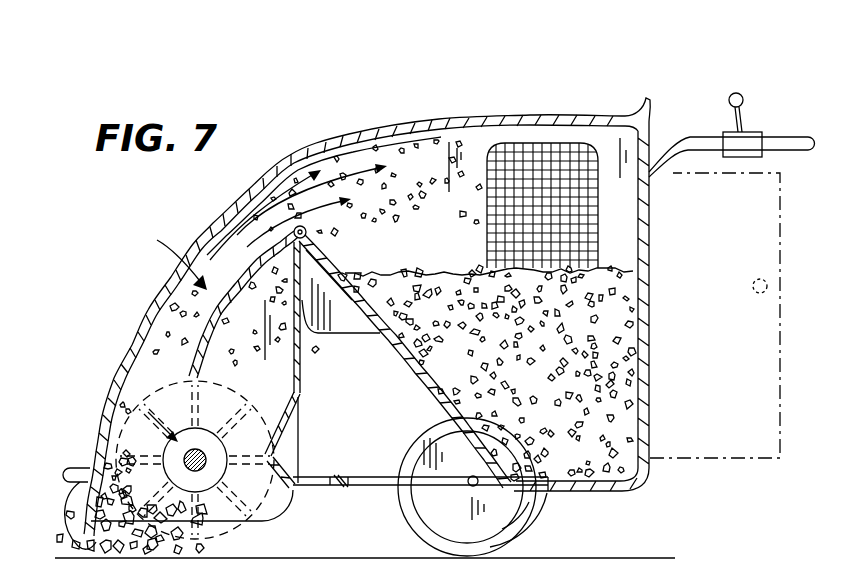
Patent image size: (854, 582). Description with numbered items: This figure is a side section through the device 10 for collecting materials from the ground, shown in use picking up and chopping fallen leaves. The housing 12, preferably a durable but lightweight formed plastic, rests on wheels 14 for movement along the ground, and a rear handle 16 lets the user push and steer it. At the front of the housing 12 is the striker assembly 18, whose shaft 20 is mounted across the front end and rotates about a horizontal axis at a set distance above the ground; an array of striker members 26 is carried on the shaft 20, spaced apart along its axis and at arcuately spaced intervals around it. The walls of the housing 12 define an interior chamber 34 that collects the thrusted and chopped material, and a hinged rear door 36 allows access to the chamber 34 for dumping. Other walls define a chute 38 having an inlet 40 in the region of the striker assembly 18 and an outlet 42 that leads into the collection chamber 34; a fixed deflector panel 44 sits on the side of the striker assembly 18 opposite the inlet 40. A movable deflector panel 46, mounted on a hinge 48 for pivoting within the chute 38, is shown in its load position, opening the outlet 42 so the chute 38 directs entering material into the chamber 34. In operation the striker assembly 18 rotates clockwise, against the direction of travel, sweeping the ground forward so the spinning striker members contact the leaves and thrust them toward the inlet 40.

The device 10 is at (589, 97).
The housing 12 is at (419, 126).
The wheels 14 is at (560, 538).
The rear handle 16 is at (787, 137).
The striker assembly 18 is at (160, 394).
The shaft 20 is at (198, 445).
The striker members 26 is at (292, 414).
The interior chamber 34 is at (471, 168).
The hinged rear door 36 is at (728, 352).
The chute 38 is at (164, 256).
The inlet 40 is at (100, 428).
The outlet 42 is at (297, 226).
The fixed deflector panel 44 is at (279, 449).
The movable deflector panel 46 is at (258, 278).
The hinge 48 is at (341, 291).